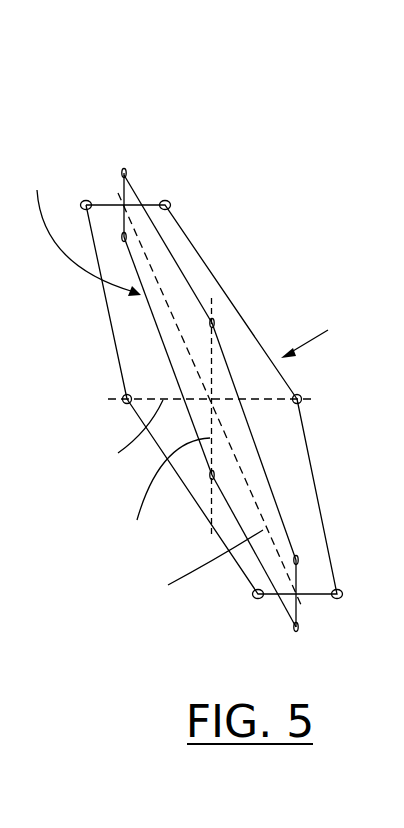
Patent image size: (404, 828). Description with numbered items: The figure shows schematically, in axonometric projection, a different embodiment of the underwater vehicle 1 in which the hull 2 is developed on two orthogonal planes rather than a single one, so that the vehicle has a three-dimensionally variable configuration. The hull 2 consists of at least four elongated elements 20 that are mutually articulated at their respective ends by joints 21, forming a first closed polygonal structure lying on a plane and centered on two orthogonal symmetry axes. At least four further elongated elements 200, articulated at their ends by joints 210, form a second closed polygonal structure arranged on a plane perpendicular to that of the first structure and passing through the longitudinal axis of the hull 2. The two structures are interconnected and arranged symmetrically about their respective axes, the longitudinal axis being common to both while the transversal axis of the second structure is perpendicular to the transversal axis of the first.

The underwater vehicle 1 is at (230, 133).
The hull 2 is at (82, 153).
The elongated element 20 is at (218, 283).
The joint 21 is at (169, 201).
The further elongated element 200 is at (170, 250).
The joint 210 is at (124, 168).